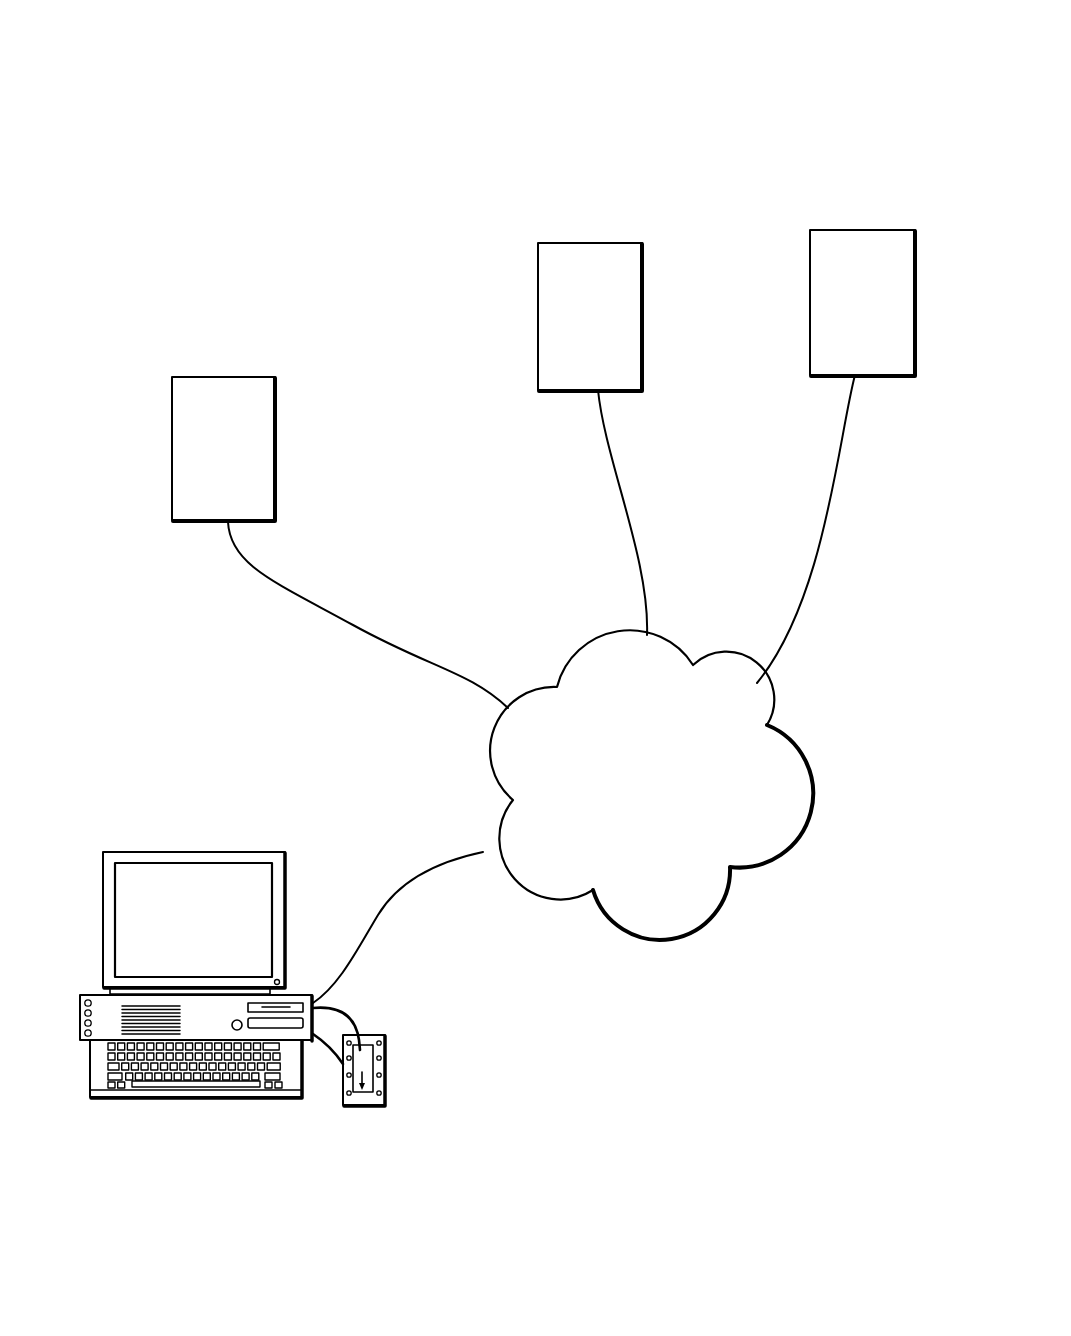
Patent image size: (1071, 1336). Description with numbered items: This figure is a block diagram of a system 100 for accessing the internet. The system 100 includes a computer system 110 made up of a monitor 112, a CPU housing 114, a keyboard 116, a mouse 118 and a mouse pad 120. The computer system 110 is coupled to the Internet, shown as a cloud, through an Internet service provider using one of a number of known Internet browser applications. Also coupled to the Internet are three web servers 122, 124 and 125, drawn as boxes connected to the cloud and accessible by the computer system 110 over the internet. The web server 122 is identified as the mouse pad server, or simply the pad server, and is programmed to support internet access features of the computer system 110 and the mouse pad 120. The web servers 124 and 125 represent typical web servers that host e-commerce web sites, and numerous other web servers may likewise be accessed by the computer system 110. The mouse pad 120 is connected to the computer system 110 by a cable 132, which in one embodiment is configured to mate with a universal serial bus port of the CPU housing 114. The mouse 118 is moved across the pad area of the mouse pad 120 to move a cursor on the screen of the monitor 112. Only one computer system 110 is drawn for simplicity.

The system 100 is at (824, 70).
The computer system 110 is at (167, 822).
The monitor 112 is at (287, 906).
The CPU housing 114 is at (92, 996).
The keyboard 116 is at (168, 1098).
The mouse 118 is at (363, 1022).
The mouse pad 120 is at (404, 1090).
The web server 122 is at (222, 376).
The web server 124 is at (578, 243).
The web server 125 is at (857, 230).
The cable 132 is at (322, 1050).